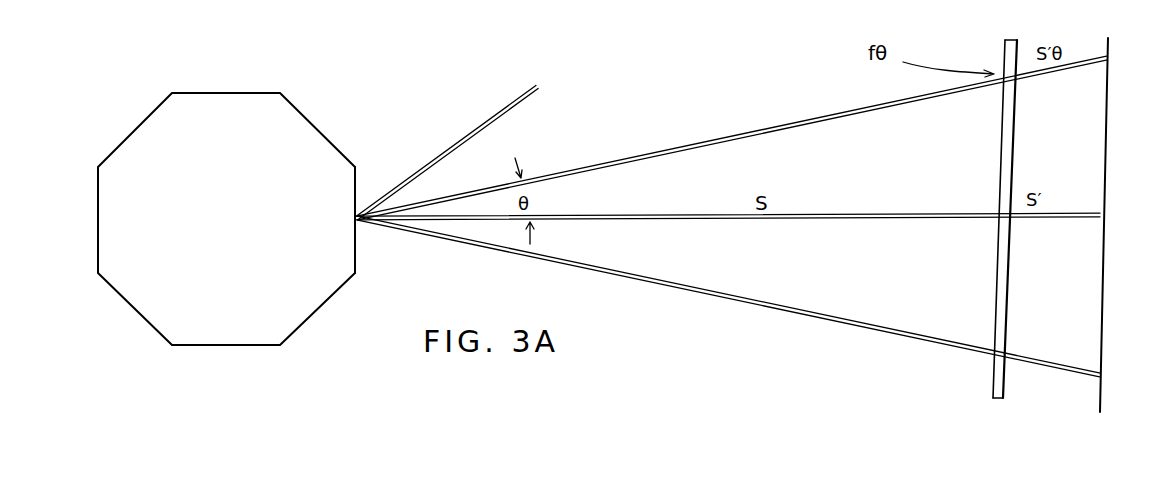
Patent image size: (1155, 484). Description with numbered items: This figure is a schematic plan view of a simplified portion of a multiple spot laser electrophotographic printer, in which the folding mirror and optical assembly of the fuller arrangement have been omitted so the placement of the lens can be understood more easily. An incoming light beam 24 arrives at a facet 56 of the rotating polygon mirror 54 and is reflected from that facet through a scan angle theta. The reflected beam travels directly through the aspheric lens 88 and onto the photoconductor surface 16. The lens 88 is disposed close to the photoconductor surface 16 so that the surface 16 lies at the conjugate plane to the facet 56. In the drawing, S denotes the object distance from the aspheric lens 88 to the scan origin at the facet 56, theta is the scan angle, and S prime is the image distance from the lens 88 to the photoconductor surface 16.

The polygon mirror 54 is at (240, 235).
The facet 56 is at (356, 182).
The incoming light beam 24 is at (496, 113).
The aspheric lens 88 is at (960, 390).
The photoconductor surface 16 is at (1106, 150).